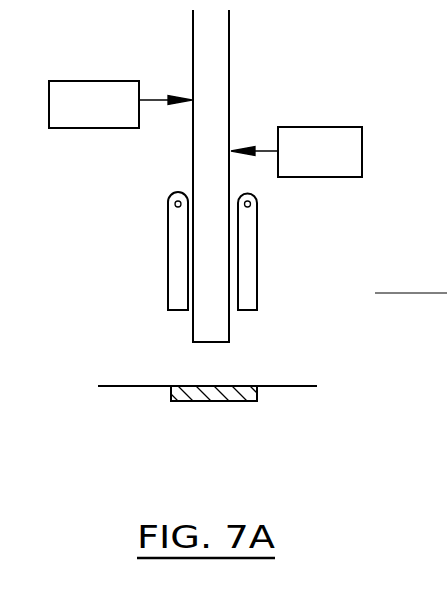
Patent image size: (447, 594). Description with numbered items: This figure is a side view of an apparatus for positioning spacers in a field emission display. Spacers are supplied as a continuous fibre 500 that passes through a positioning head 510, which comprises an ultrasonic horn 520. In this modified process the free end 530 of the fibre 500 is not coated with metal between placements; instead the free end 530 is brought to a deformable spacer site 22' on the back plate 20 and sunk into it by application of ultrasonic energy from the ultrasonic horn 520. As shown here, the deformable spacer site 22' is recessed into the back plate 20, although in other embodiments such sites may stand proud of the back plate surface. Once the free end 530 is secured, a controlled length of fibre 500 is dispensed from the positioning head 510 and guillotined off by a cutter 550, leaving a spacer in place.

The continuous fibre 500 is at (229, 40).
The ultrasonic horn 520 is at (113, 116).
The cutter 550 is at (340, 163).
The positioning head 510 is at (168, 248).
The free end 530 is at (218, 342).
The back plate 20 is at (328, 423).
The deformable spacer site 22' is at (214, 427).